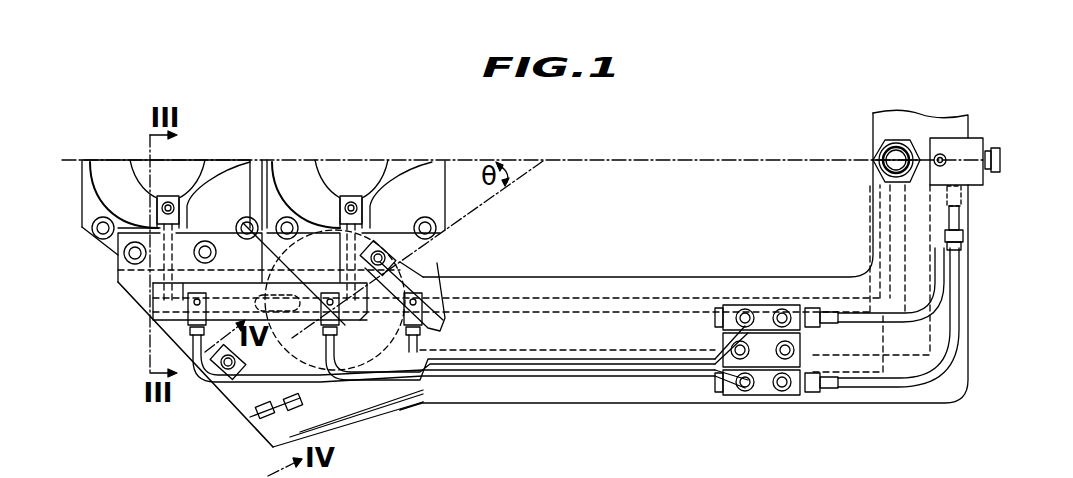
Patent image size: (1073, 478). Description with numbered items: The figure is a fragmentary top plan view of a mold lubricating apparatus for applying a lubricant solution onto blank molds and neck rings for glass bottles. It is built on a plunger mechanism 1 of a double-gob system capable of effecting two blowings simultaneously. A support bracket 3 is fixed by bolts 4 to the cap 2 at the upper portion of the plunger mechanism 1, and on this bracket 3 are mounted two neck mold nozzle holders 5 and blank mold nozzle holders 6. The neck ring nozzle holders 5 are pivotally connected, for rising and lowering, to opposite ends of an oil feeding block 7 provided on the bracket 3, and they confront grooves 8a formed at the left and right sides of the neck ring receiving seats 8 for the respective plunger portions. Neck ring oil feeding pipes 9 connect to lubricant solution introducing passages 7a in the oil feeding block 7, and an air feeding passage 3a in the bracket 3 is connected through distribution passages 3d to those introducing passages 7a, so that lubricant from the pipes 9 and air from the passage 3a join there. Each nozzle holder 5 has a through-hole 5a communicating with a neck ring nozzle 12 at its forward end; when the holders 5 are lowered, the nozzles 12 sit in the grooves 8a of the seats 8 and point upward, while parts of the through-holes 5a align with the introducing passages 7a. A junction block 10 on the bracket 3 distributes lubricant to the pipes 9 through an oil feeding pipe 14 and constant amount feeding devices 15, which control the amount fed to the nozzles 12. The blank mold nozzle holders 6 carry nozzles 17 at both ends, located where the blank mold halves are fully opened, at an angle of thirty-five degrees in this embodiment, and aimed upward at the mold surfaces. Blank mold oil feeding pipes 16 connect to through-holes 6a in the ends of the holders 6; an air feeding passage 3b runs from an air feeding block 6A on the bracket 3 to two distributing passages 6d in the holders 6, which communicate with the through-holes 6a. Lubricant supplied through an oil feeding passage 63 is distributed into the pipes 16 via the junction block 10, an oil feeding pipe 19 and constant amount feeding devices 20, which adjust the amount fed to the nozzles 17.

The plunger mechanism 1 is at (82, 244).
The cap 2 is at (82, 200).
The support bracket 3 is at (637, 278).
The air feeding passage 3a is at (887, 216).
The air feeding passage 3b is at (885, 374).
The distribution passages 3d is at (296, 325).
The bolts 4 is at (206, 248).
The neck mold nozzle holders 5 is at (140, 296).
The through-holes 5a is at (153, 327).
The blank mold nozzle holders 6 is at (256, 420).
The air feeding block 6A is at (340, 416).
The through-holes 6a is at (243, 403).
The distributing passages 6d is at (378, 412).
The oil feeding block 7 is at (207, 243).
The lubricant solution introducing passages 7a is at (160, 332).
The neck ring receiving seats 8 is at (103, 172).
The grooves 8a is at (155, 196).
The neck ring oil feeding pipes 9 is at (529, 352).
The junction block 10 is at (970, 150).
The neck ring nozzles 12 is at (173, 206).
The oil feeding pipe 14 is at (940, 306).
The constant amount feeding devices 15 is at (730, 305).
The blank mold oil feeding pipes 16 is at (554, 366).
The nozzles 17 is at (213, 380).
The oil feeding pipe 19 is at (953, 339).
The constant amount feeding devices 20 is at (733, 395).
The oil feeding passage 63 is at (1006, 160).